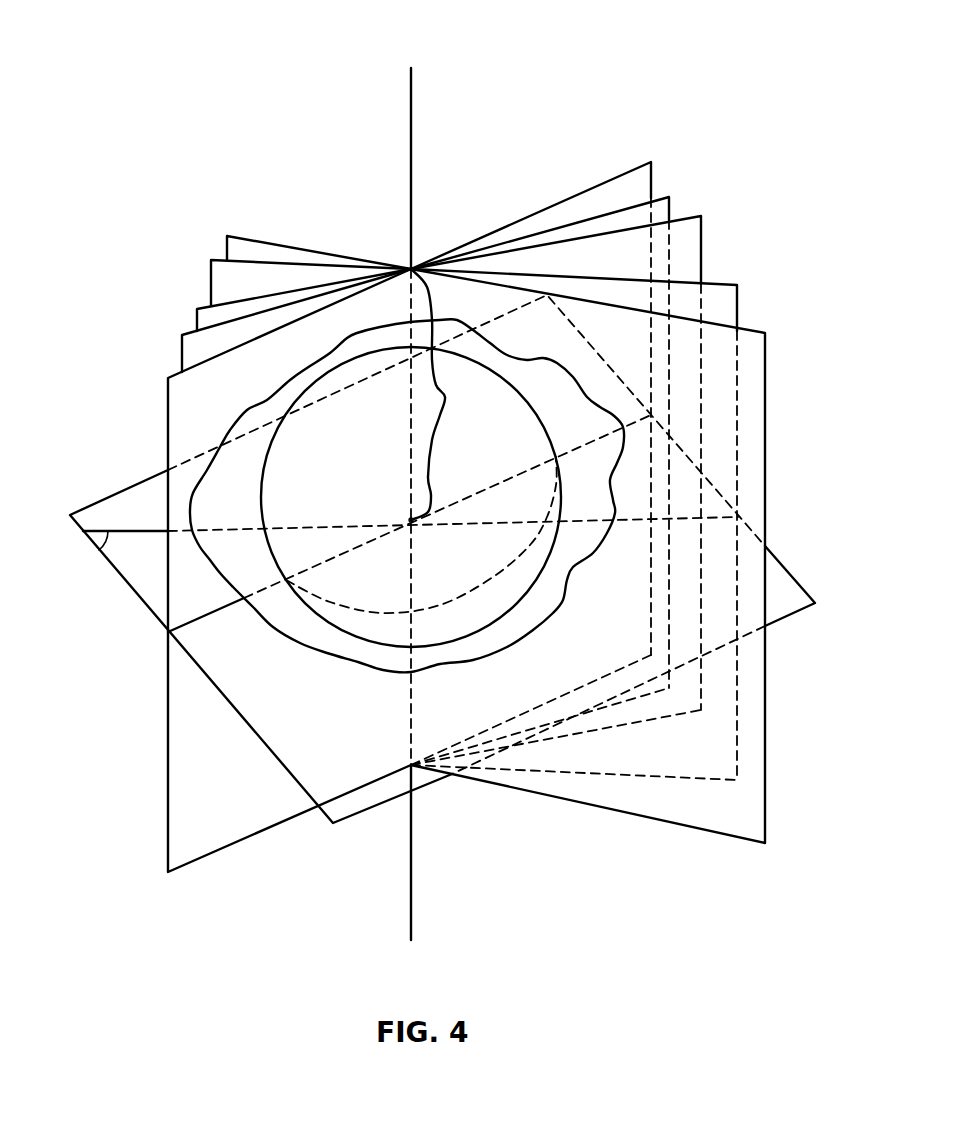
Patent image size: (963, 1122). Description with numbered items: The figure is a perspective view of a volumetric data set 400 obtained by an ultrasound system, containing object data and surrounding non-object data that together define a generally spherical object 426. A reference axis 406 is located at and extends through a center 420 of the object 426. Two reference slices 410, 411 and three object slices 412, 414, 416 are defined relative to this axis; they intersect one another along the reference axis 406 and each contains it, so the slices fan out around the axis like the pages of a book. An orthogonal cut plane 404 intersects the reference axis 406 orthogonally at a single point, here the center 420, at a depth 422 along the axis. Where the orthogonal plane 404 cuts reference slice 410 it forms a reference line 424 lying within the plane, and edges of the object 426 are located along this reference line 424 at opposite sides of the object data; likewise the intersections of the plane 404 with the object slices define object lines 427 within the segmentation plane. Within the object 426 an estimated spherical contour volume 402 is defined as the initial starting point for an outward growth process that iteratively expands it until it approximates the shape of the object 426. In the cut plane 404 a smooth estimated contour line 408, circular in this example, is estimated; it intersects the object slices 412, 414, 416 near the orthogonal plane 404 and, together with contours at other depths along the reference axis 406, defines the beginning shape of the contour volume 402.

The volumetric data set 400 is at (191, 64).
The estimated spherical contour volume 402 is at (302, 395).
The orthogonal cut plane 404 is at (803, 590).
The reference axis 406 is at (407, 737).
The estimated contour line 408 is at (493, 576).
The reference slice 410 is at (642, 163).
The reference slice 411 is at (752, 333).
The object slice 412 is at (657, 197).
The object slice 414 is at (688, 217).
The object slice 416 is at (722, 285).
The center 420 is at (411, 520).
The depth 422 is at (446, 397).
The reference line 424 is at (193, 623).
The object 426 is at (230, 430).
The object line 427 is at (105, 548).